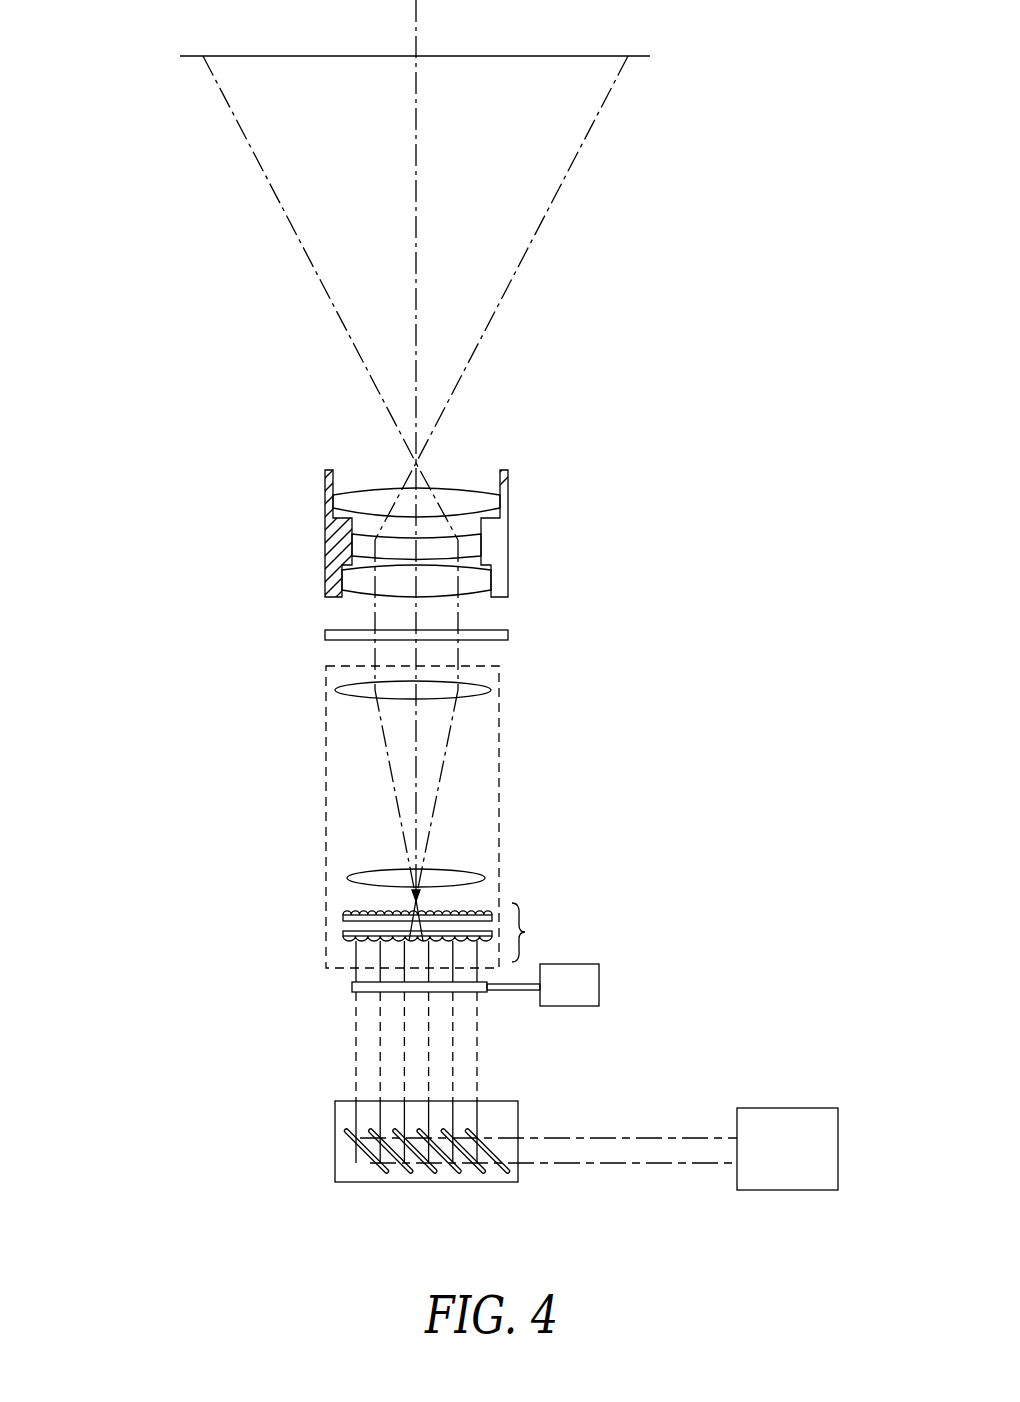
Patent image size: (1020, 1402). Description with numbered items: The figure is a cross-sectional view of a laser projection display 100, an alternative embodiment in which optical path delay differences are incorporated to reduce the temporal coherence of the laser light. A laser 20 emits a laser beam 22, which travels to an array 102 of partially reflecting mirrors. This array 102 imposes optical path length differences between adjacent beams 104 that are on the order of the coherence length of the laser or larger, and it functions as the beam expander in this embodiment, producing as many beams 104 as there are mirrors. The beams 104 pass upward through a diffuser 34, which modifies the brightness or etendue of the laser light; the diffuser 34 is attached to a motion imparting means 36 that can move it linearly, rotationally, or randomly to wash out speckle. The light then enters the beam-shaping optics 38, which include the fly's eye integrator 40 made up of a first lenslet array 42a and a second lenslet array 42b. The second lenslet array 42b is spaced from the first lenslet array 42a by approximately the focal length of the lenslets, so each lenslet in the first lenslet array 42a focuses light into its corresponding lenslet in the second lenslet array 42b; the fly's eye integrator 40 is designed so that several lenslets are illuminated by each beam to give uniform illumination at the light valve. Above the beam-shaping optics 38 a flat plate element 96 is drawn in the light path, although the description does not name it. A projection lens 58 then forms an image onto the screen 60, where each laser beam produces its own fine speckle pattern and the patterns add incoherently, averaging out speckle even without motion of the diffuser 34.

The laser 20 is at (774, 1108).
The laser beam 22 is at (660, 1138).
The diffuser 34 is at (352, 987).
The motion imparting means 36 is at (600, 990).
The beam-shaping optics 38 is at (326, 758).
The fly's eye integrator 40 is at (535, 932).
The first lenslet array 42a is at (356, 940).
The second lenslet array 42b is at (355, 913).
The projection lens 58 is at (325, 534).
The screen 60 is at (354, 58).
The filter plate 96 is at (325, 633).
The laser projection display 100 is at (232, 292).
The array of partially reflecting mirrors 102 is at (335, 1145).
The beams 104 is at (356, 1040).